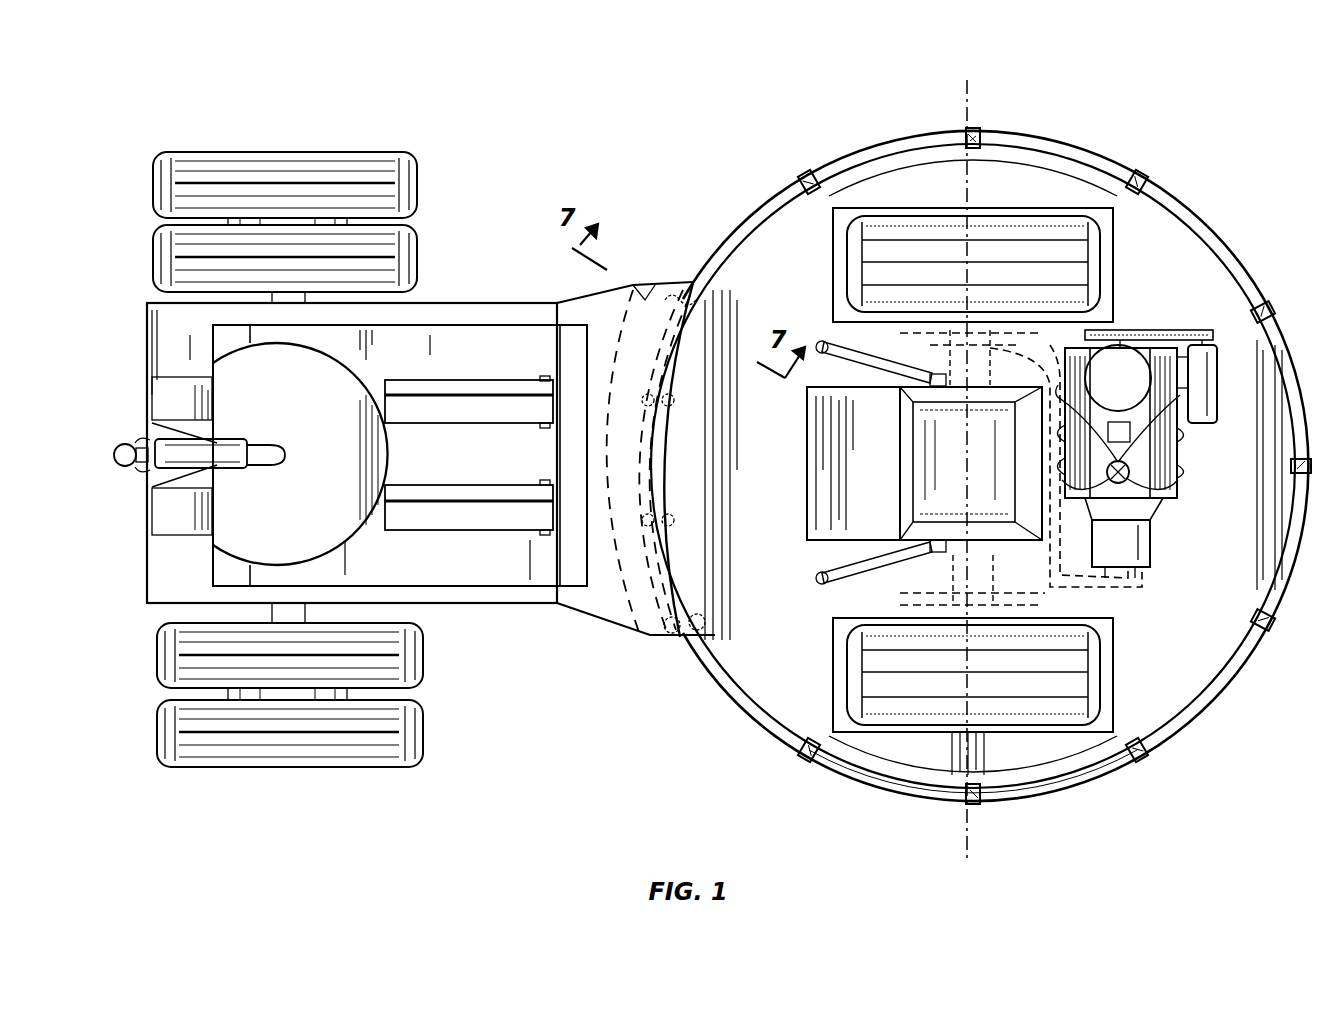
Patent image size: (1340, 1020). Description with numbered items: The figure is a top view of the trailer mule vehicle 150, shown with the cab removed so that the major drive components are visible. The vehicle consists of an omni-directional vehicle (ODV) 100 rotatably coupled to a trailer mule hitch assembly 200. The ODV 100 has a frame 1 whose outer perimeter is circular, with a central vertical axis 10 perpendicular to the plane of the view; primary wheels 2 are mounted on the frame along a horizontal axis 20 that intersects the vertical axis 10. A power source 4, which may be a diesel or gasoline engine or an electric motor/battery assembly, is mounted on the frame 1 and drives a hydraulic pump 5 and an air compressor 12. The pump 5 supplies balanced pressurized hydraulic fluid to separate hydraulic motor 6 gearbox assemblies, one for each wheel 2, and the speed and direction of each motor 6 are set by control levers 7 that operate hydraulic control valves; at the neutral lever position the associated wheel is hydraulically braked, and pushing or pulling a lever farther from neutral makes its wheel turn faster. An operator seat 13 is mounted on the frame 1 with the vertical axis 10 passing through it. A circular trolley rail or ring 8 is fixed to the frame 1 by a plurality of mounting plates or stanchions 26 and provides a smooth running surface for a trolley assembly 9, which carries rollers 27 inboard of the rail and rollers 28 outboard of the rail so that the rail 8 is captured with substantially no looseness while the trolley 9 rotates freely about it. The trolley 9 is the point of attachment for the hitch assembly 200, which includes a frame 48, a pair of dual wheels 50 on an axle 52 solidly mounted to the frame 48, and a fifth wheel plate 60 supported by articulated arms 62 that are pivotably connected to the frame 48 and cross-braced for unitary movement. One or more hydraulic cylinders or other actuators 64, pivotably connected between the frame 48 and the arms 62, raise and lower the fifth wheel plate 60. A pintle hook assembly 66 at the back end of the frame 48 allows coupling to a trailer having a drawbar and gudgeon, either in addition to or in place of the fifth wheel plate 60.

The frame 1 is at (1160, 263).
The primary wheels 2 is at (1057, 216).
The power source 4 is at (1180, 464).
The hydraulic pump 5 is at (1150, 537).
The hydraulic motor 6 is at (952, 360).
The control levers 7 is at (832, 344).
The trolley rail 8 is at (916, 800).
The trolley assembly 9 is at (640, 285).
The central vertical axis 10 is at (975, 460).
The air compressor 12 is at (1205, 356).
The seat 13 is at (915, 478).
The horizontal axis 20 is at (965, 96).
The mounting plates or stanchions 26 is at (1262, 318).
The cams or rollers 27 is at (700, 624).
The cams or rollers 28 is at (670, 633).
The frame 48 is at (607, 605).
The dual wheels 50 is at (417, 200).
The axle 52 is at (272, 614).
The fifth wheel plate 60 is at (252, 566).
The articulated arms 62 is at (485, 424).
The hydraulic cylinders or actuators 64 is at (218, 443).
The pintle hook assembly 66 is at (122, 470).
The omni-directional vehicle 100 is at (733, 190).
The trailer mule vehicle 150 is at (718, 100).
The trailer mule hitch assembly 200 is at (550, 180).